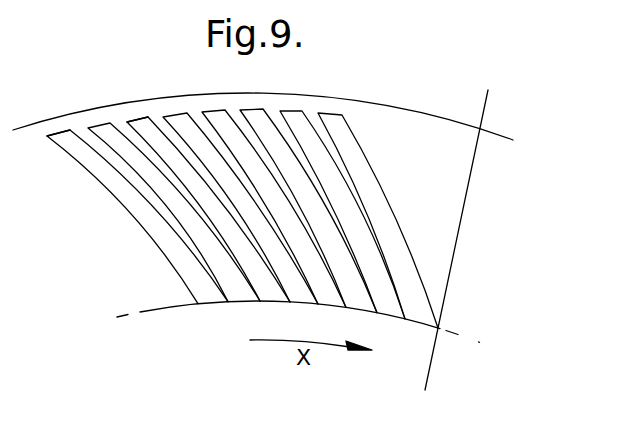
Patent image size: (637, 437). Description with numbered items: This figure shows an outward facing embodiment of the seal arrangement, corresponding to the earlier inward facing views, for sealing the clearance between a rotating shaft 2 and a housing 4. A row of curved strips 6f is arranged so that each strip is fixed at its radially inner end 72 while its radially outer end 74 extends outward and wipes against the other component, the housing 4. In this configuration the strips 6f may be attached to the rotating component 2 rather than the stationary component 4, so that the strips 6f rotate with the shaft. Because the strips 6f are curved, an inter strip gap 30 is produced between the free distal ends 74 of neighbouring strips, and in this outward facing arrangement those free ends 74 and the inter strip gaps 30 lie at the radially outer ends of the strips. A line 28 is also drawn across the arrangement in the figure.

The rotating shaft 2 is at (380, 388).
The housing 4 is at (258, 94).
The strips 6f is at (208, 203).
The section line 28 is at (486, 114).
The inter strip gap 30 is at (153, 121).
The radially inner ends 72 is at (195, 273).
The radially outer ends 74 is at (67, 138).